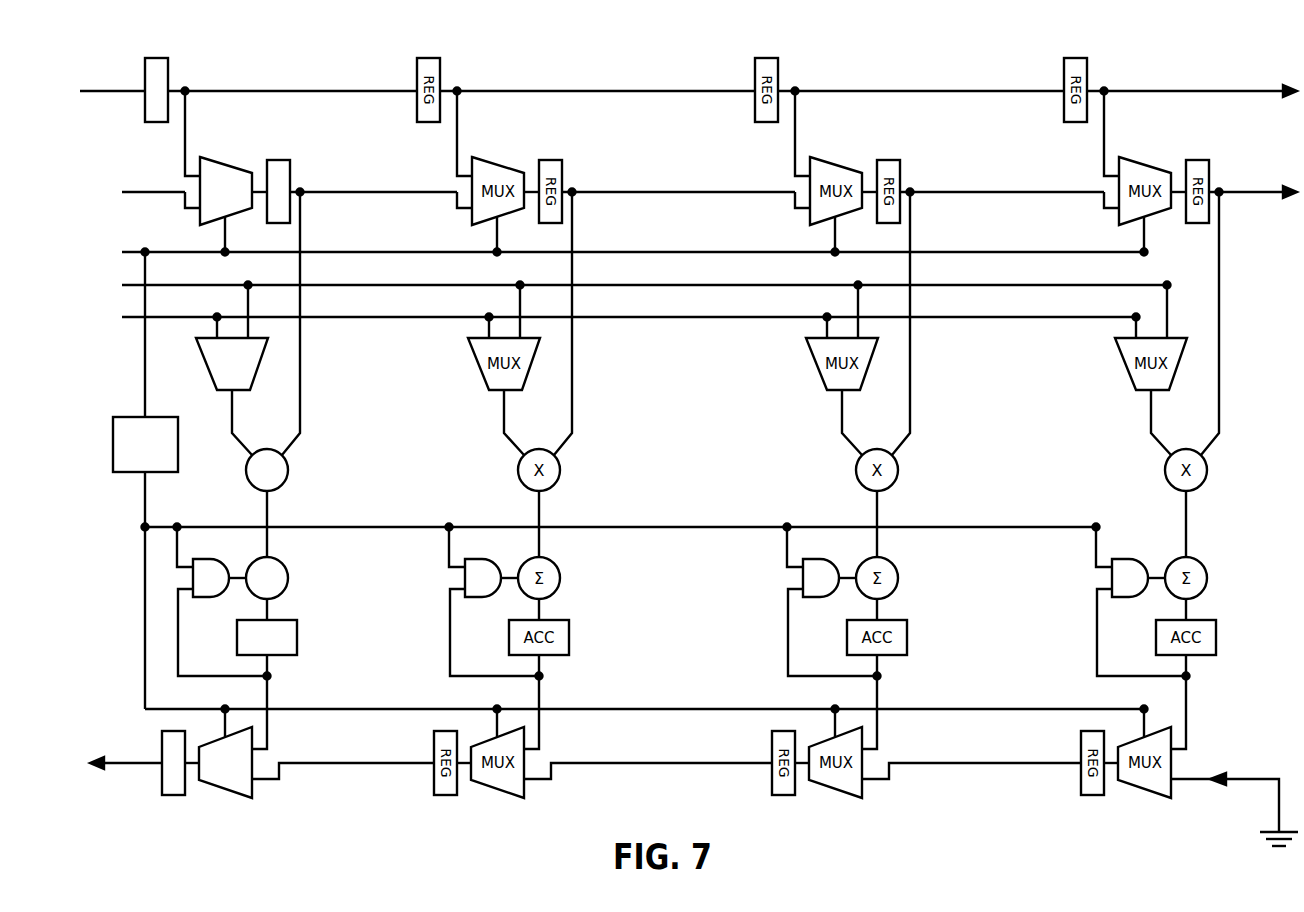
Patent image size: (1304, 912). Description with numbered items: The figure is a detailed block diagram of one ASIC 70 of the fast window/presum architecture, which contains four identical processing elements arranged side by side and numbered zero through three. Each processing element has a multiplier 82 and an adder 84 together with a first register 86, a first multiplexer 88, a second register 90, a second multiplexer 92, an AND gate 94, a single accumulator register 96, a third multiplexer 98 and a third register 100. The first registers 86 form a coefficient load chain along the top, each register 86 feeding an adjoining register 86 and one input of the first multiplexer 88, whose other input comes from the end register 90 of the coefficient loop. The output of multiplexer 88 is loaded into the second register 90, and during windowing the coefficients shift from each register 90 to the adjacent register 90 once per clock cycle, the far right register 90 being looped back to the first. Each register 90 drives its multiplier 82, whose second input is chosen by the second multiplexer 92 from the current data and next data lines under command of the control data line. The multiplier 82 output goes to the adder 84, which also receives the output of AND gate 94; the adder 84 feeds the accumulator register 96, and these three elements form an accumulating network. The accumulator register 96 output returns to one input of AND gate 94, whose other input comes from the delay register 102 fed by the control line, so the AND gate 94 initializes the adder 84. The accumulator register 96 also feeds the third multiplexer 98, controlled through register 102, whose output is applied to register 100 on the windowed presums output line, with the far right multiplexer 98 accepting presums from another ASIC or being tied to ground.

The ASIC 70 is at (669, 431).
The multiplier 82 is at (262, 450).
The adder 84 is at (276, 560).
The first register 86 is at (170, 62).
The first multiplexer 88 is at (204, 215).
The second register 90 is at (278, 160).
The second multiplexer 92 is at (218, 378).
The AND gate 94 is at (210, 578).
The accumulator register 96 is at (237, 648).
The third multiplexer 98 is at (225, 780).
The third register 100 is at (175, 790).
The delay register 102 is at (130, 472).